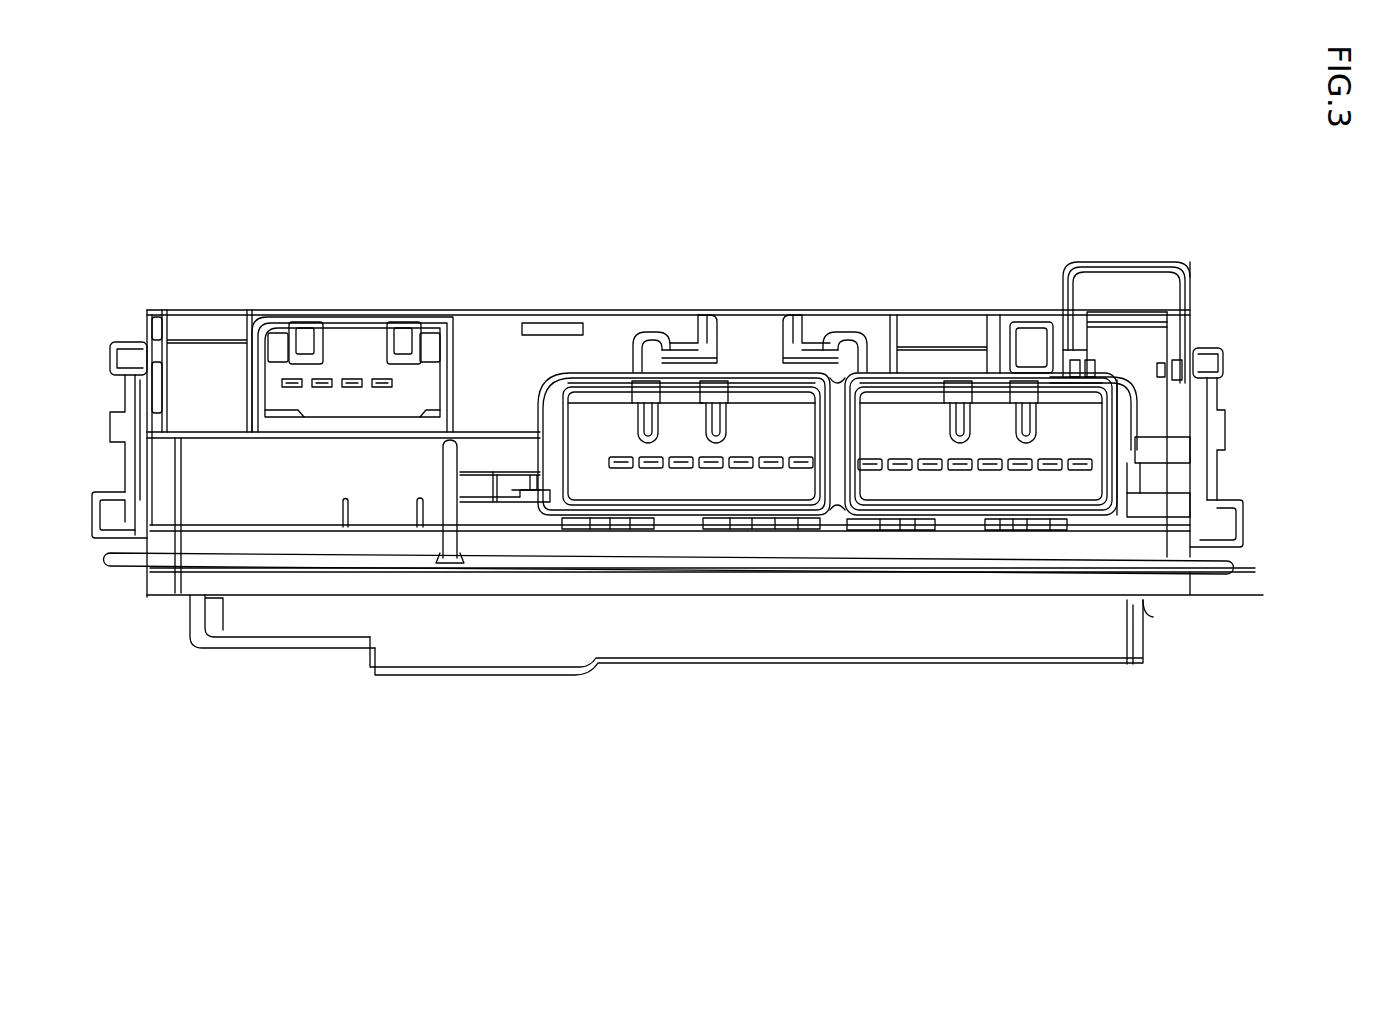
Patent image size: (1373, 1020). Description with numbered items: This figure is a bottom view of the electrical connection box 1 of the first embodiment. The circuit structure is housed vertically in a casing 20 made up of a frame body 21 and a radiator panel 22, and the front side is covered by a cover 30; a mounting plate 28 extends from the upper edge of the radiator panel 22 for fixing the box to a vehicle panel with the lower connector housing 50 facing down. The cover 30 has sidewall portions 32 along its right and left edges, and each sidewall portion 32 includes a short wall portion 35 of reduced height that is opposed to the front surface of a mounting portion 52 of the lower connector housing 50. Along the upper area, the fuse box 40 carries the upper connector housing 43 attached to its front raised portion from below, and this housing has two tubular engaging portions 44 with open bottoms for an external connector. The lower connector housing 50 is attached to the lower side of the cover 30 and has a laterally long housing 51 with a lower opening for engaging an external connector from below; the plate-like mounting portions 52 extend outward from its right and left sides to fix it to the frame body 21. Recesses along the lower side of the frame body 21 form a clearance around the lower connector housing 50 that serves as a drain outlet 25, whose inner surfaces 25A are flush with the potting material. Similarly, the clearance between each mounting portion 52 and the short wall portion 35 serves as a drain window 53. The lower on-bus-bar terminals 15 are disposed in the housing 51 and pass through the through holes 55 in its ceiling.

The electrical connection box 1 is at (937, 150).
The lower on-bus-bar terminals 15 is at (680, 467).
The casing 20 is at (240, 770).
The frame body 21 is at (237, 582).
The radiator panel 22 is at (247, 623).
The drain outlet 25 is at (590, 513).
The inner surfaces of the drain outlets 25A is at (600, 516).
The mounting plate 28 is at (1023, 647).
The cover 30 is at (203, 468).
The sidewall portions 32 is at (208, 502).
The short wall portion 35 is at (488, 453).
The fuse box 40 is at (1118, 277).
The upper connector housing 43 is at (485, 335).
The tubular engaging portions 44 is at (352, 330).
The lower connector housing 50 is at (777, 388).
The housing 51 is at (935, 507).
The mounting portions 52 is at (498, 510).
The drain window 53 is at (543, 487).
The through holes 55 is at (648, 467).